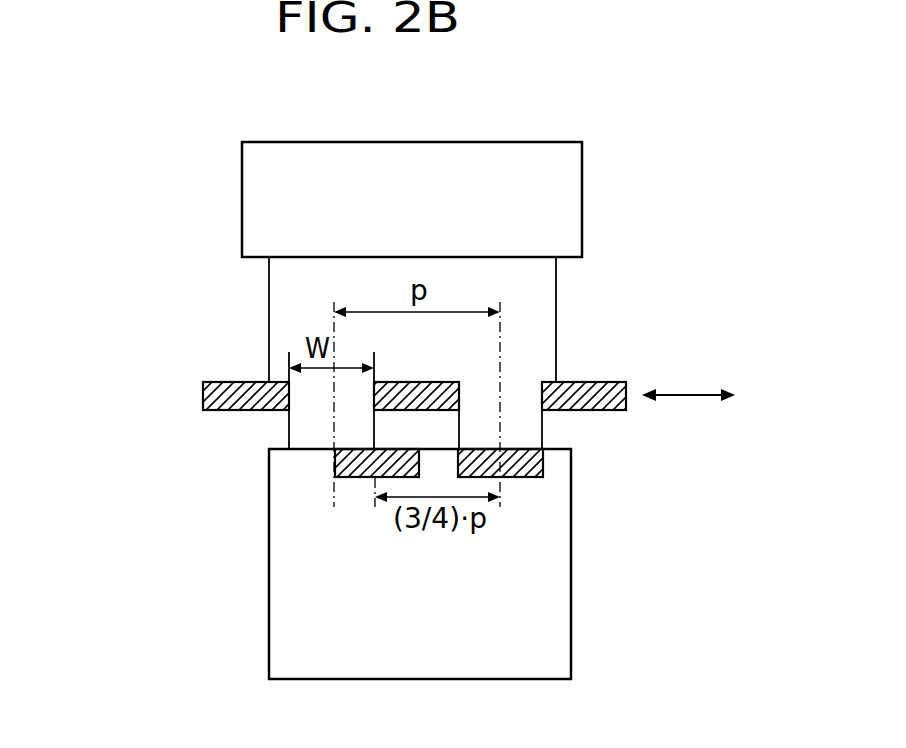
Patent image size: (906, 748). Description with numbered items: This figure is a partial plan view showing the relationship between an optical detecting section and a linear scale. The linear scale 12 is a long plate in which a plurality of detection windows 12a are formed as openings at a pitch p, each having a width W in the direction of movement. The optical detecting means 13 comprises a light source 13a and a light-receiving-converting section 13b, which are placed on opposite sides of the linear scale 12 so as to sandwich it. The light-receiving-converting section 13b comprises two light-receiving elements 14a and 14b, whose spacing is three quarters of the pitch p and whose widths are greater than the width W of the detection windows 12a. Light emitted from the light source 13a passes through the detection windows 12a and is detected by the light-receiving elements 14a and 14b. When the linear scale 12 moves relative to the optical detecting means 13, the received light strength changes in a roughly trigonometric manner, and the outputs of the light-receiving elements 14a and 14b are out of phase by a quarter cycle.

The linear scale 12 is at (627, 383).
The detection windows 12a is at (541, 395).
The optical detecting means 13 is at (110, 222).
The light source 13a is at (267, 207).
The light-receiving-converting section 13b is at (305, 518).
The light-receiving element 14a is at (350, 478).
The light-receiving element 14b is at (522, 478).